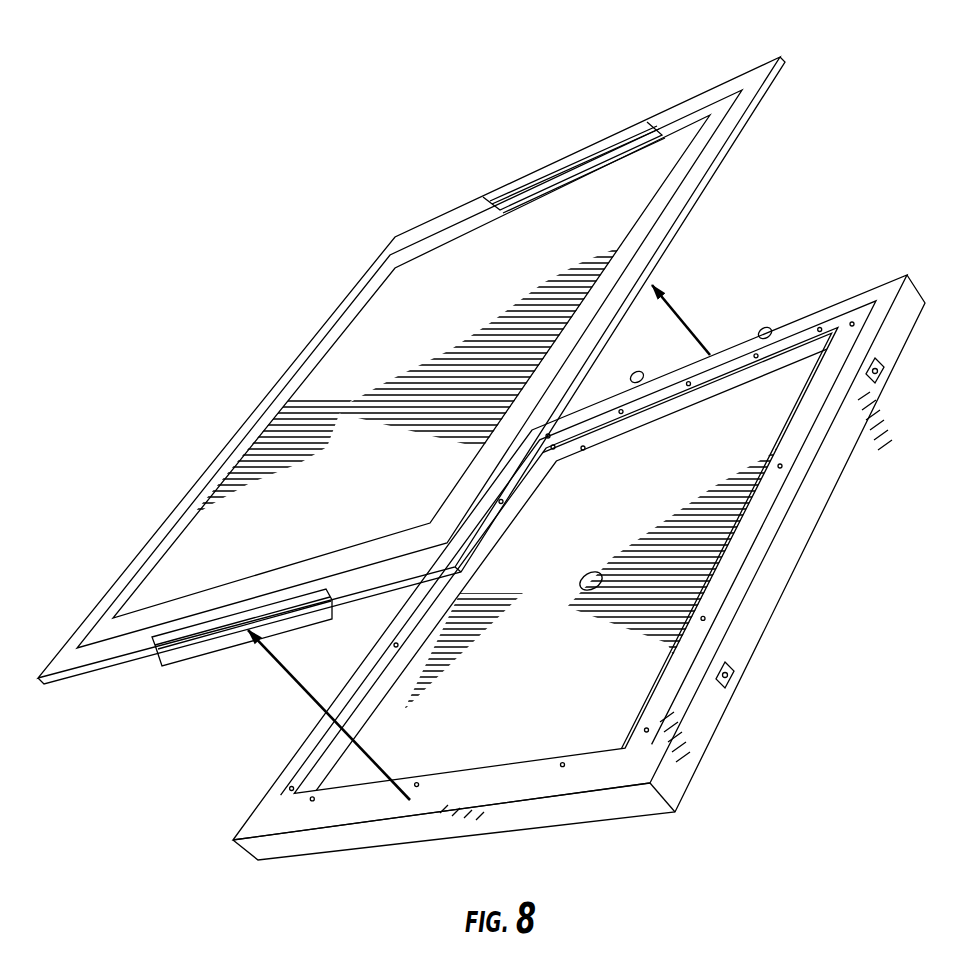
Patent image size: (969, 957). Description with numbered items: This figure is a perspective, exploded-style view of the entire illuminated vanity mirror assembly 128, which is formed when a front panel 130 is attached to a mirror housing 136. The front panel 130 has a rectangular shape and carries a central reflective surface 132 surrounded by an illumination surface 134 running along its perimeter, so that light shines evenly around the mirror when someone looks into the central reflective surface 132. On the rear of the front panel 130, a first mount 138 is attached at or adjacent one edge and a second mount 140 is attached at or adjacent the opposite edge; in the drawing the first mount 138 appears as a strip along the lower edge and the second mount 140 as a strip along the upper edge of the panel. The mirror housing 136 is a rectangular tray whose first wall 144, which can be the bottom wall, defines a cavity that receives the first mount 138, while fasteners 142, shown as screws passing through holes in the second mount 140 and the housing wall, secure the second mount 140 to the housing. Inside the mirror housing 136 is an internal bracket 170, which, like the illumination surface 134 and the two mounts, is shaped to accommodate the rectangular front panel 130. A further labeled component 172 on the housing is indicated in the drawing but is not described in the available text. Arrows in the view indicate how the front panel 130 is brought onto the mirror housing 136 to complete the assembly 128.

The illuminated vanity mirror assembly 128 is at (210, 300).
The front panel 130 is at (188, 491).
The central reflective surface 132 is at (312, 387).
The illumination surface 134 is at (365, 288).
The mirror housing 136 is at (906, 349).
The first mount 138 is at (217, 626).
The second mount 140 is at (572, 155).
The fasteners 142 is at (642, 374).
The first wall 144 is at (600, 807).
The internal bracket 170 is at (790, 484).
The frame inner lip 172 is at (785, 541).